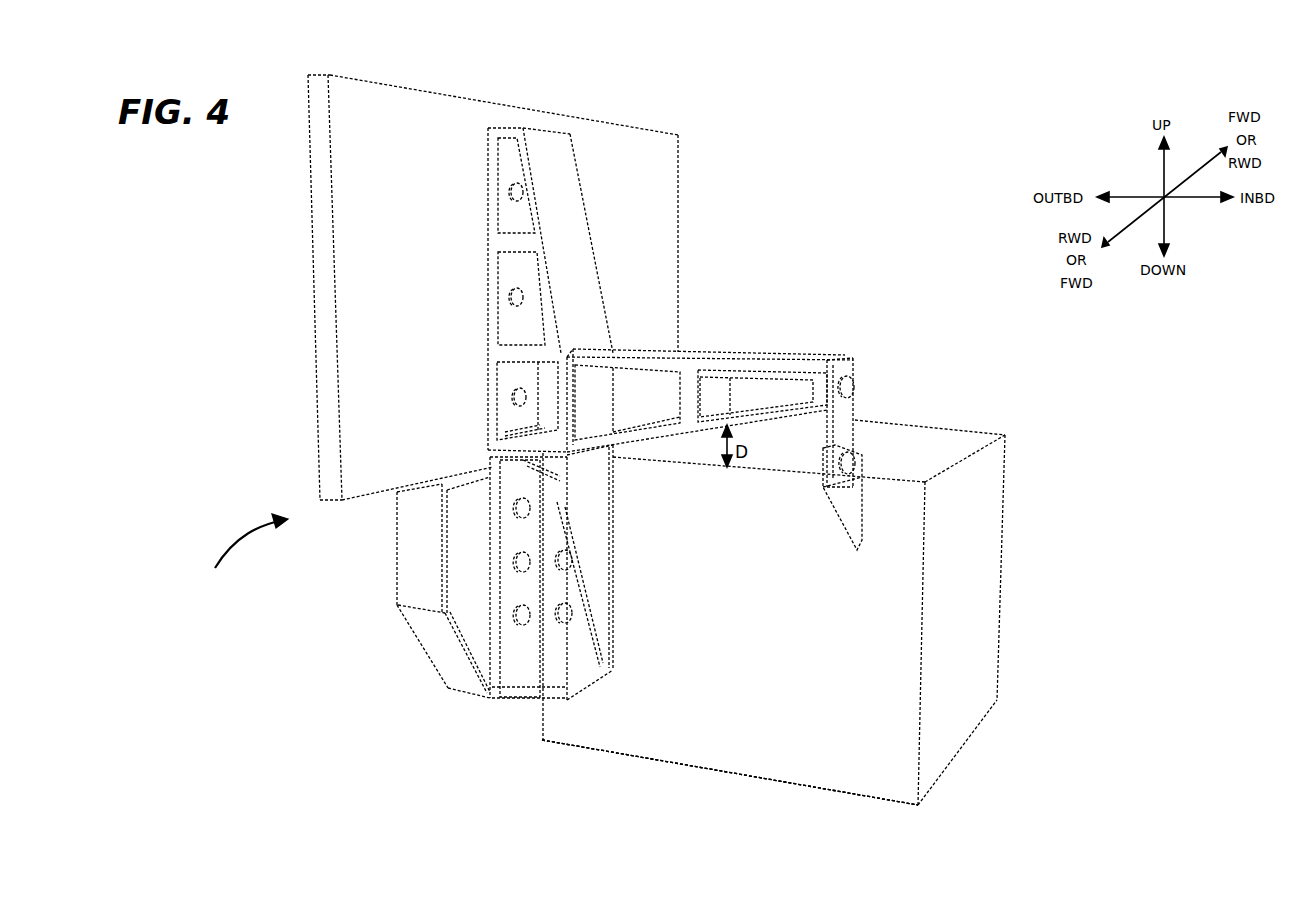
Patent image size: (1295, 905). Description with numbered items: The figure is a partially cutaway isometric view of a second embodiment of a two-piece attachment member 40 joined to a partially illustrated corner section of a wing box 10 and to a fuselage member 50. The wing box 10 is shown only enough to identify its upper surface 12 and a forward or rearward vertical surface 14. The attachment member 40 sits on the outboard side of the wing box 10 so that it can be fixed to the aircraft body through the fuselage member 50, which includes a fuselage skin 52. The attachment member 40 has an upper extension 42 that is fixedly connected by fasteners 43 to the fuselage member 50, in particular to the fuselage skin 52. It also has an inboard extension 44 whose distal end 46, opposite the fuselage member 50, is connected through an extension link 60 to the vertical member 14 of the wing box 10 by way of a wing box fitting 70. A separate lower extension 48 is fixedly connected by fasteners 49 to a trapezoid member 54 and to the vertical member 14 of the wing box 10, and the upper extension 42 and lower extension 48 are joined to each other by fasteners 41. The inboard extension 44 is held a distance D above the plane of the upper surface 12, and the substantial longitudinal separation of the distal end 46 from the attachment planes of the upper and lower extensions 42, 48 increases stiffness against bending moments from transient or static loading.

The wing box 10 is at (730, 706).
The upper surface 12 is at (943, 462).
The vertical surface 14 is at (690, 667).
The two-piece attachment member 40 is at (590, 350).
The fasteners 41 is at (537, 428).
The upper extension 42 is at (577, 217).
The fasteners 43 is at (524, 398).
The inboard extension 44 is at (690, 368).
The distal end 46 is at (846, 368).
The lower extension 48 is at (562, 613).
The fasteners 49 is at (602, 613).
The fuselage member 50 is at (246, 549).
The fuselage skin 52 is at (322, 265).
The trapezoid member 54 is at (413, 570).
The extension link 60 is at (843, 418).
The wing box fitting 70 is at (852, 505).